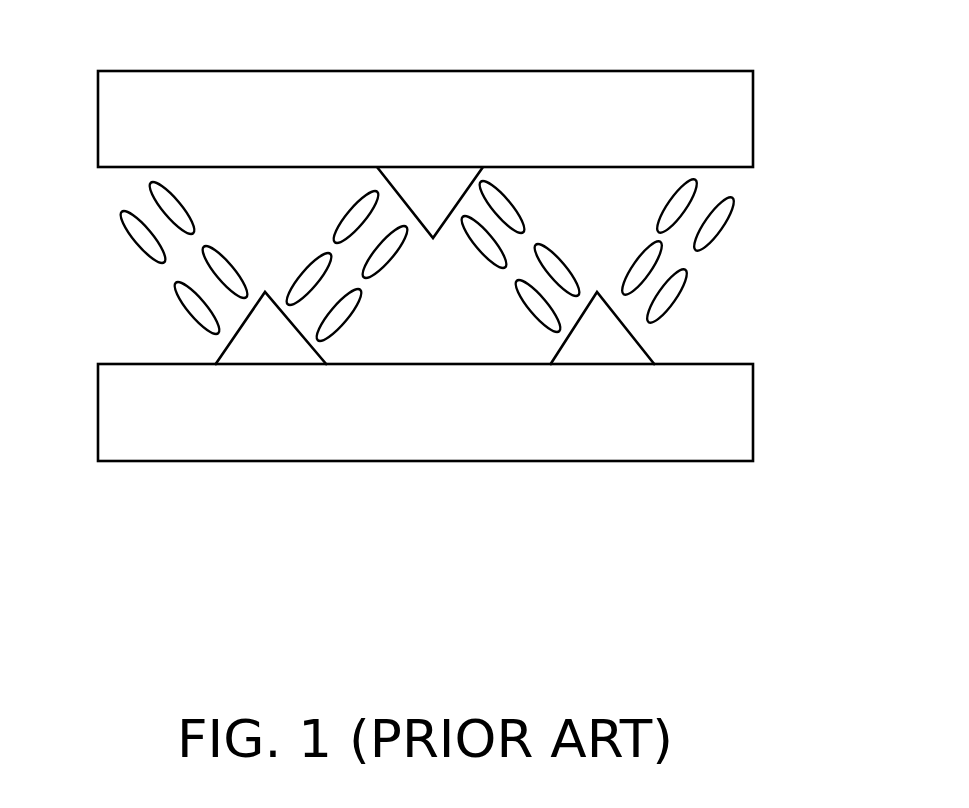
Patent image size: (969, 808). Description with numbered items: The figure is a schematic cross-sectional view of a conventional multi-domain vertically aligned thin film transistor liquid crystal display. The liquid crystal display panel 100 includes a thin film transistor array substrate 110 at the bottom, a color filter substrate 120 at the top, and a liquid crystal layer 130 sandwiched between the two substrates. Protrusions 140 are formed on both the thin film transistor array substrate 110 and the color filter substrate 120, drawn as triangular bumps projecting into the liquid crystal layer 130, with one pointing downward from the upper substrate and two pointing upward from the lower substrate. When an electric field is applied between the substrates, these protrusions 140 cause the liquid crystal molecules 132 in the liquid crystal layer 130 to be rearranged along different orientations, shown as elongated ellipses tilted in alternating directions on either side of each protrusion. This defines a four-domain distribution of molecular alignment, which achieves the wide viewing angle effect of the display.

The liquid crystal display panel 100 is at (457, 296).
The thin film transistor array substrate 110 is at (727, 412).
The color filter substrate 120 is at (730, 120).
The liquid crystal layer 130 is at (722, 278).
The liquid crystal molecules 132 is at (722, 213).
The protrusions 140 is at (432, 187).